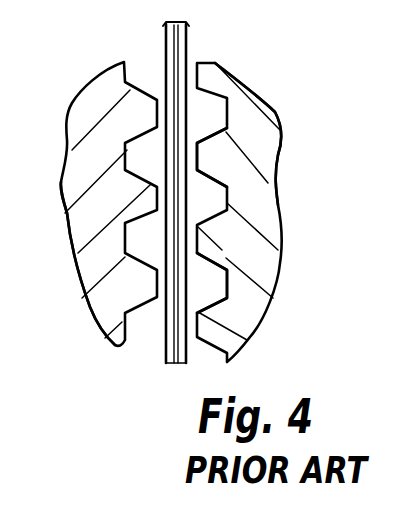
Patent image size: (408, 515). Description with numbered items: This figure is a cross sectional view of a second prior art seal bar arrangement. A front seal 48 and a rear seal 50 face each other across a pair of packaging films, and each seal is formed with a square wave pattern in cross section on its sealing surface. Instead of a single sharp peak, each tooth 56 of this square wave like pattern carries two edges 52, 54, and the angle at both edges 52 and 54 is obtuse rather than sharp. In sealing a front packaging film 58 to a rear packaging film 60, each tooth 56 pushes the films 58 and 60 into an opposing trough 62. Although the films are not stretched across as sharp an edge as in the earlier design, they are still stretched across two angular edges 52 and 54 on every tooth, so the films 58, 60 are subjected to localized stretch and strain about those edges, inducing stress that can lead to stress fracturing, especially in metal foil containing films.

The front seal 48 is at (253, 313).
The rear seal 50 is at (140, 242).
The edge 52 is at (205, 222).
The edge 54 is at (203, 249).
The tooth 56 is at (203, 157).
The front packaging film 58 is at (187, 45).
The rear packaging film 60 is at (166, 43).
The trough 62 is at (93, 312).